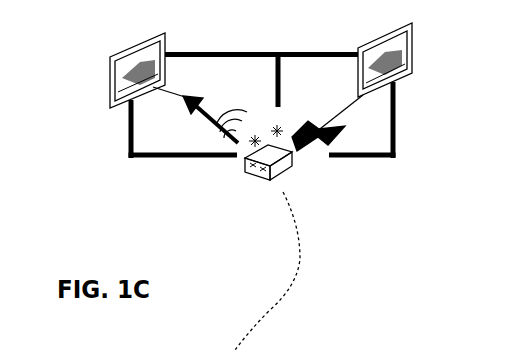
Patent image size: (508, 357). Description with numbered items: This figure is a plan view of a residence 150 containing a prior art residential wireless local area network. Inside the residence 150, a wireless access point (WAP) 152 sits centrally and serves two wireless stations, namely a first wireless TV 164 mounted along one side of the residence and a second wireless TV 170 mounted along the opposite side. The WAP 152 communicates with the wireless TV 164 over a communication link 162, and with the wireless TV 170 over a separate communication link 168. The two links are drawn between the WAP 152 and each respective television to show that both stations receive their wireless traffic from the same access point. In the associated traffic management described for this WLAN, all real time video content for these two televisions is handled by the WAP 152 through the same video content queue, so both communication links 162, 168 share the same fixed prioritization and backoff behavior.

The residence 150 is at (396, 135).
The wireless access point (WAP) 152 is at (288, 169).
The communication link 162 is at (190, 100).
The wireless TV 164 is at (168, 67).
The communication link 168 is at (356, 99).
The wireless TV 170 is at (414, 65).